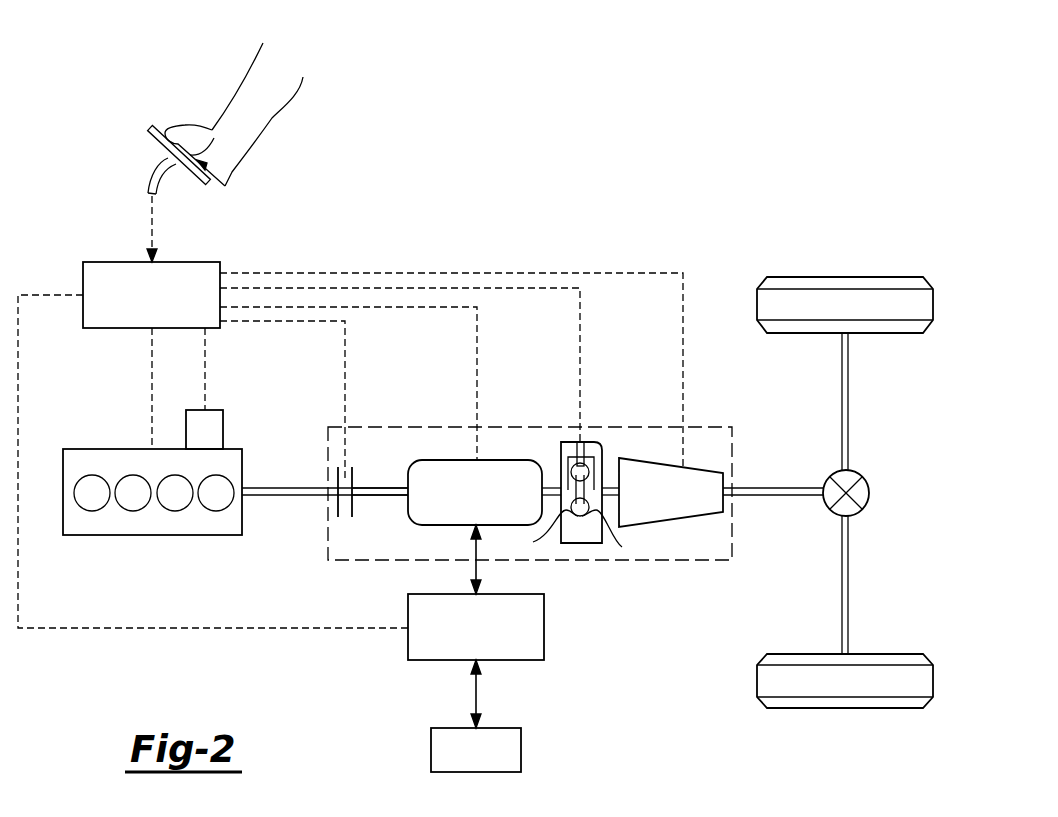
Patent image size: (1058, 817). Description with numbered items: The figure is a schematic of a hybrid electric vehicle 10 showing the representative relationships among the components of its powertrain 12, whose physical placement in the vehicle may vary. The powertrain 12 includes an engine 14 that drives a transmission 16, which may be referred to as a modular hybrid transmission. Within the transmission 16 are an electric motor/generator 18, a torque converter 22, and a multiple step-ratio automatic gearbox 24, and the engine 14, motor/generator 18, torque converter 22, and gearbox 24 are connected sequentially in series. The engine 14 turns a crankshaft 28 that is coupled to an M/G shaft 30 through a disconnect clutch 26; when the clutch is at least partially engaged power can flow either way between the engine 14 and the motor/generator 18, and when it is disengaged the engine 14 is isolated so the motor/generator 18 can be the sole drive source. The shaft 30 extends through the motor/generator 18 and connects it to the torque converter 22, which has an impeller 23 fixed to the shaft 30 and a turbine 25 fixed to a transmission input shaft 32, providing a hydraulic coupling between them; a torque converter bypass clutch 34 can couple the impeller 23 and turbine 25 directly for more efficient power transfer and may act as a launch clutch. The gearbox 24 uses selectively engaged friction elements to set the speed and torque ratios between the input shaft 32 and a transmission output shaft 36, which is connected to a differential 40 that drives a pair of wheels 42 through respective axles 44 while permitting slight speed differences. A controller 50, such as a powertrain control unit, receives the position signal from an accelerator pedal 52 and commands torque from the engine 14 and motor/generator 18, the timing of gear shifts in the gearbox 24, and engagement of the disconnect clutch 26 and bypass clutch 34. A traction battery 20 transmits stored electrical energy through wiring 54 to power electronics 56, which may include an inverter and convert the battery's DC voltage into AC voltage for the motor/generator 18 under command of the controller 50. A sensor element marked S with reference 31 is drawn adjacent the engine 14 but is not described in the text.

The hybrid electric vehicle 10 is at (700, 212).
The powertrain 12 is at (278, 668).
The engine 14 is at (84, 449).
The transmission 16 is at (517, 427).
The electric motor/generator 18 is at (455, 460).
The traction battery 20 is at (431, 748).
The torque converter 22 is at (576, 501).
The impeller 23 is at (582, 582).
The gearbox 24 is at (665, 527).
The turbine 25 is at (540, 534).
The disconnect clutch 26 is at (352, 517).
The crankshaft 28 is at (307, 487).
The M/G shaft 30 is at (384, 487).
The sensor 31 is at (217, 410).
The transmission input shaft 32 is at (608, 486).
The torque converter bypass clutch 34 is at (581, 444).
The transmission output shaft 36 is at (788, 487).
The differential 40 is at (870, 493).
The wheels 42 is at (811, 277).
The axles 44 is at (850, 400).
The controller 50 is at (100, 262).
The accelerator pedal 52 is at (151, 136).
The wiring 54 is at (473, 695).
The power electronics 56 is at (544, 630).